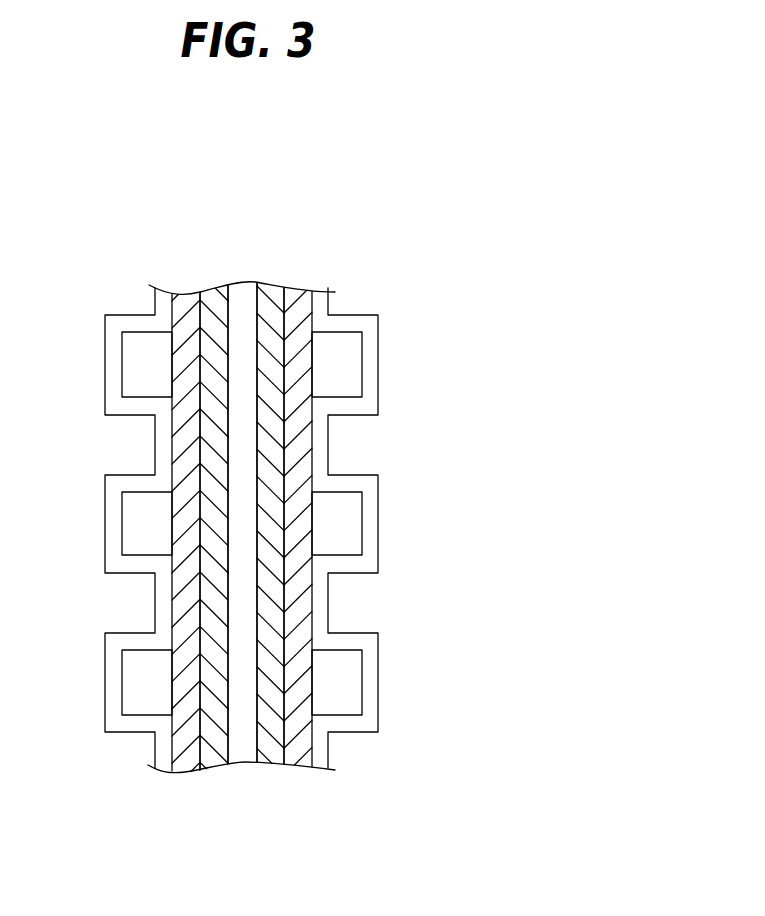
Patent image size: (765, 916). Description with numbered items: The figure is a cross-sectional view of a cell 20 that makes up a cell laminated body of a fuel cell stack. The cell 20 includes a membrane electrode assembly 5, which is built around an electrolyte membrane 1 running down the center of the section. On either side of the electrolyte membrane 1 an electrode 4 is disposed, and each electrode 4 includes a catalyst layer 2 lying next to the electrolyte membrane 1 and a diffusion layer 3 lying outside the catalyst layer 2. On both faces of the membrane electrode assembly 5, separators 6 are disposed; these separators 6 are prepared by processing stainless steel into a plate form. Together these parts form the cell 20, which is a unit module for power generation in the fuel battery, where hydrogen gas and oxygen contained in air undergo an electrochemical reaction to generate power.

The electrolyte membrane 1 is at (238, 755).
The catalyst layer 2 is at (214, 766).
The diffusion layer 3 is at (186, 762).
The electrode 4 is at (133, 845).
The membrane electrode assembly 5 is at (298, 283).
The separator 6 is at (132, 735).
The cell 20 is at (377, 283).